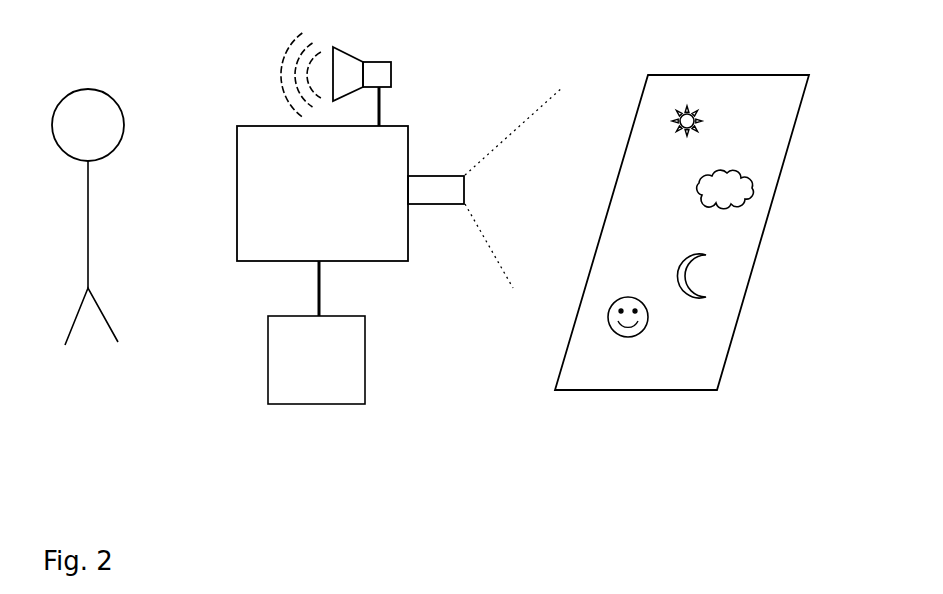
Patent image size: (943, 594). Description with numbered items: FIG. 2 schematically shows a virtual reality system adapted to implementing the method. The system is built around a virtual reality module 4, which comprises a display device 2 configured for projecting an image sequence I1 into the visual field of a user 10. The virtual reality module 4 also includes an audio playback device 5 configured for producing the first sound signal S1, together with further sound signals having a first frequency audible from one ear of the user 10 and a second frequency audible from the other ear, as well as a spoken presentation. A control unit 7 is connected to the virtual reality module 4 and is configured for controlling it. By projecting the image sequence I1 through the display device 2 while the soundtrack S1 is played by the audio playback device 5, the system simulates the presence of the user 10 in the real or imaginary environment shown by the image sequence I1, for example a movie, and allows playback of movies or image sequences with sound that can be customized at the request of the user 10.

The display device 2 is at (442, 188).
The virtual reality module 4 is at (410, 254).
The audio playback device 5 is at (389, 70).
The control unit 7 is at (352, 380).
The user 10 is at (91, 218).
The image sequence I1 is at (710, 185).
The first sound signal S1 is at (284, 52).